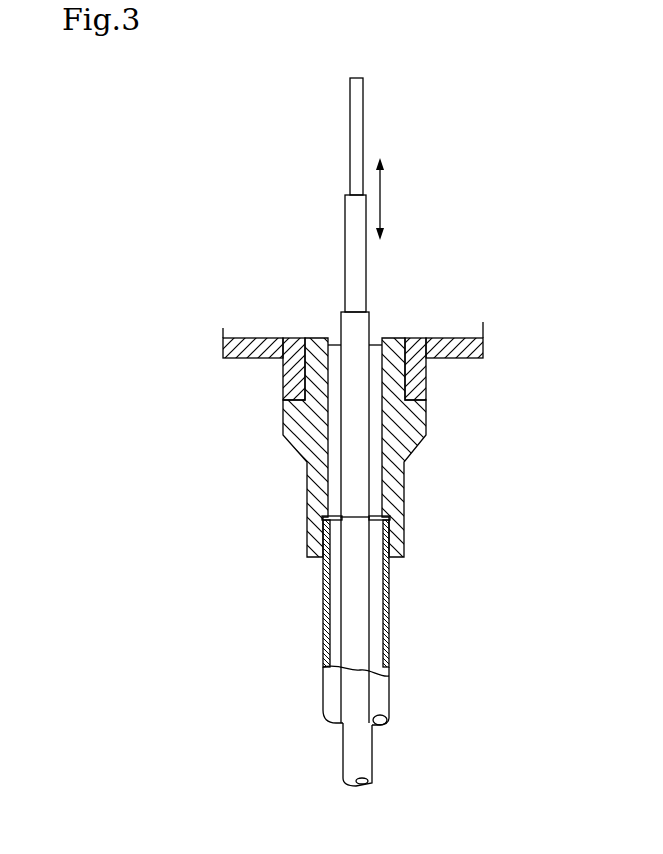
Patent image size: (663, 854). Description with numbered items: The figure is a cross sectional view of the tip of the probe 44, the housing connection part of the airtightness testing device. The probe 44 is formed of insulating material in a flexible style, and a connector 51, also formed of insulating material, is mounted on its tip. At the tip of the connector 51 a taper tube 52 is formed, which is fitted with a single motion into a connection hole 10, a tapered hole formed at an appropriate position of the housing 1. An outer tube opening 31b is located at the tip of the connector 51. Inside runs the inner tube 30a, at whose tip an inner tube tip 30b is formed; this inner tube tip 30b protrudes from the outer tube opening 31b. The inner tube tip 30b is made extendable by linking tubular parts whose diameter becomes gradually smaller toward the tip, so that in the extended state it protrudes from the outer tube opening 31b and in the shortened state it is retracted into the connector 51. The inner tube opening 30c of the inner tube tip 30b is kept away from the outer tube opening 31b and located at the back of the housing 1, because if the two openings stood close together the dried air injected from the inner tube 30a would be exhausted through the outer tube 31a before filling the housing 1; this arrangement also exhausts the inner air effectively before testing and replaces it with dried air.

The housing 1 is at (460, 360).
The connection hole 10 is at (300, 340).
The inner tube 30a is at (348, 482).
The inner tube tip 30b is at (350, 160).
The inner tube opening 30c is at (357, 78).
The outer tube 31a is at (322, 622).
The outer tube opening 31b is at (337, 338).
The probe 44 is at (407, 667).
The connector 51 is at (288, 422).
The taper tube 52 is at (406, 382).